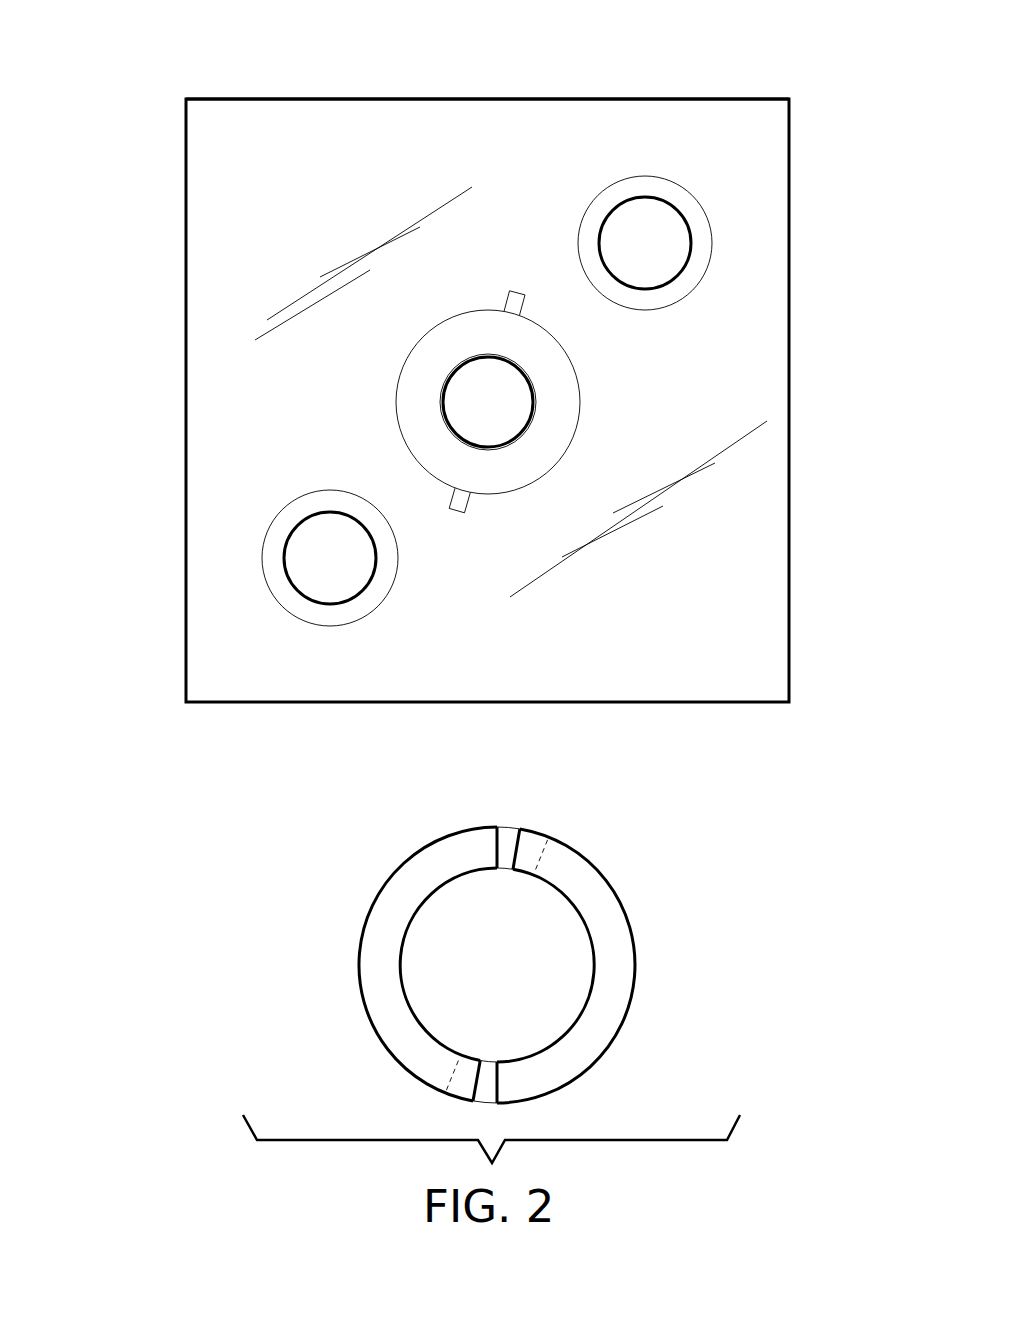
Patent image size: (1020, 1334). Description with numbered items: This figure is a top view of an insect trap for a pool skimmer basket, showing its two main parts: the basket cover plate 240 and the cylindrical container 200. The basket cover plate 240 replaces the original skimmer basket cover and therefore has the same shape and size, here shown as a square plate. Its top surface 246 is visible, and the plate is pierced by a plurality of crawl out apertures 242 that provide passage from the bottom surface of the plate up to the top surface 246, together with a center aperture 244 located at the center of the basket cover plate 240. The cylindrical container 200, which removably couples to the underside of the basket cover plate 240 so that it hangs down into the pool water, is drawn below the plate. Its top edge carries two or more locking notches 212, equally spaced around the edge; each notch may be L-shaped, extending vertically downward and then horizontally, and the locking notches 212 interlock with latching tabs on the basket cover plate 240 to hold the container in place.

The cylindrical container 200 is at (357, 952).
The locking notches 212 is at (515, 852).
The basket cover plate 240 is at (186, 203).
The crawl out apertures 242 is at (333, 605).
The center aperture 244 is at (443, 395).
The top surface 246 is at (298, 115).